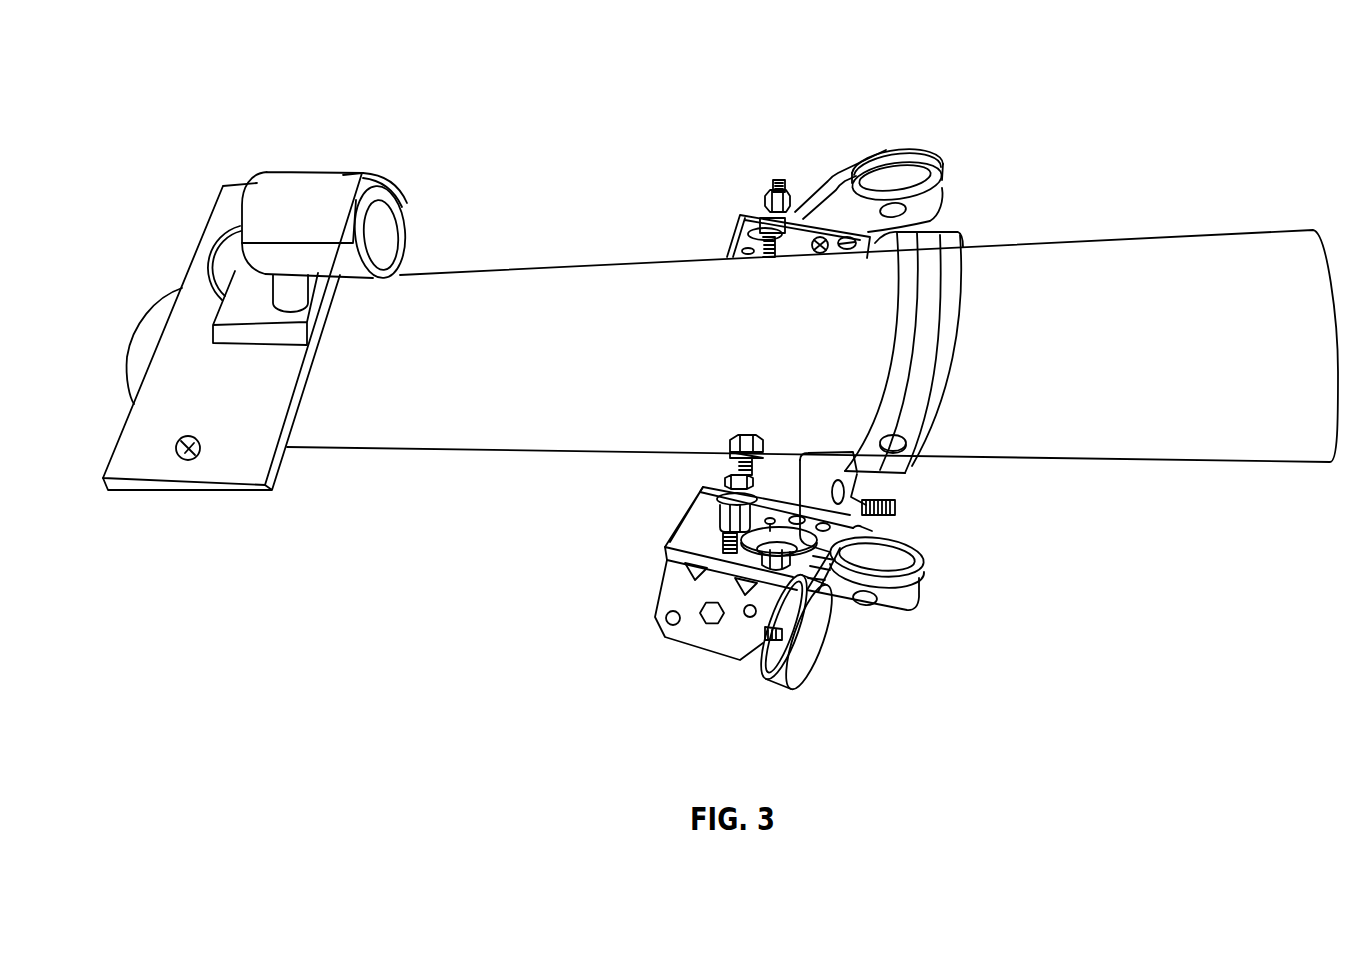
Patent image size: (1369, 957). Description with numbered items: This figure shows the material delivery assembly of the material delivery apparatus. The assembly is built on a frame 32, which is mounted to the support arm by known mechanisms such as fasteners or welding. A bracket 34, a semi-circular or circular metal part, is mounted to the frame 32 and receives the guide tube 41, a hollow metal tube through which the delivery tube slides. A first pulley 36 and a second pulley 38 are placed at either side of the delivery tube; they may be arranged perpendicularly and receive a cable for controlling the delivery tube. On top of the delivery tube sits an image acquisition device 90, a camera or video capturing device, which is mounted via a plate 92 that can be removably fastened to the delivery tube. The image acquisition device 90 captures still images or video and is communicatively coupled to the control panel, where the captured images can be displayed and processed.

The frame 32 is at (723, 643).
The bracket 34 is at (925, 337).
The first pulley 36 is at (793, 663).
The second pulley 38 is at (913, 153).
The guide tube 41 is at (1132, 447).
The image acquisition device 90 is at (313, 187).
The plate 92 is at (132, 447).